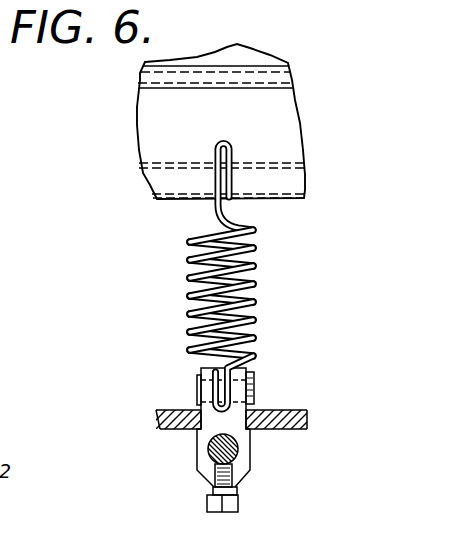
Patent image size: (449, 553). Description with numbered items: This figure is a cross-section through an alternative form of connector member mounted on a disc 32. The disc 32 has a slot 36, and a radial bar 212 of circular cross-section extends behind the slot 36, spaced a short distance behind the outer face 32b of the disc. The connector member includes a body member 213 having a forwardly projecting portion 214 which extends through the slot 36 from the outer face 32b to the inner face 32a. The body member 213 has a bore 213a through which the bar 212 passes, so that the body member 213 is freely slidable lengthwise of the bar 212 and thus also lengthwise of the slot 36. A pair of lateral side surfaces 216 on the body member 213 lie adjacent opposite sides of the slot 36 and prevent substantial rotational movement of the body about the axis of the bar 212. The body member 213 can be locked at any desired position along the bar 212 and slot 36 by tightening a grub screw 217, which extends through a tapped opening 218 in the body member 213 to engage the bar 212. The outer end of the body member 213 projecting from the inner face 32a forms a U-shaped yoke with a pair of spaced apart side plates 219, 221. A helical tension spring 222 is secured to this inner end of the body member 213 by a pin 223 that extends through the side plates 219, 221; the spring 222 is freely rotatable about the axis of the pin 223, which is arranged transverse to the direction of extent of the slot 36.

The helical tension spring 222 is at (253, 270).
The side plate 219 is at (199, 370).
The side plate 221 is at (246, 372).
The forwardly projecting portion 214 is at (196, 408).
The pin 223 is at (254, 379).
The disc 32 is at (259, 417).
The inner face 32a is at (307, 408).
The outer face 32b is at (300, 431).
The slot 36 is at (250, 409).
The lateral side surfaces 216 is at (172, 430).
The radial bar 212 is at (210, 449).
The body member 213 is at (205, 481).
The bore 213a is at (250, 466).
The tapped opening 218 is at (200, 480).
The grub screw 217 is at (238, 510).